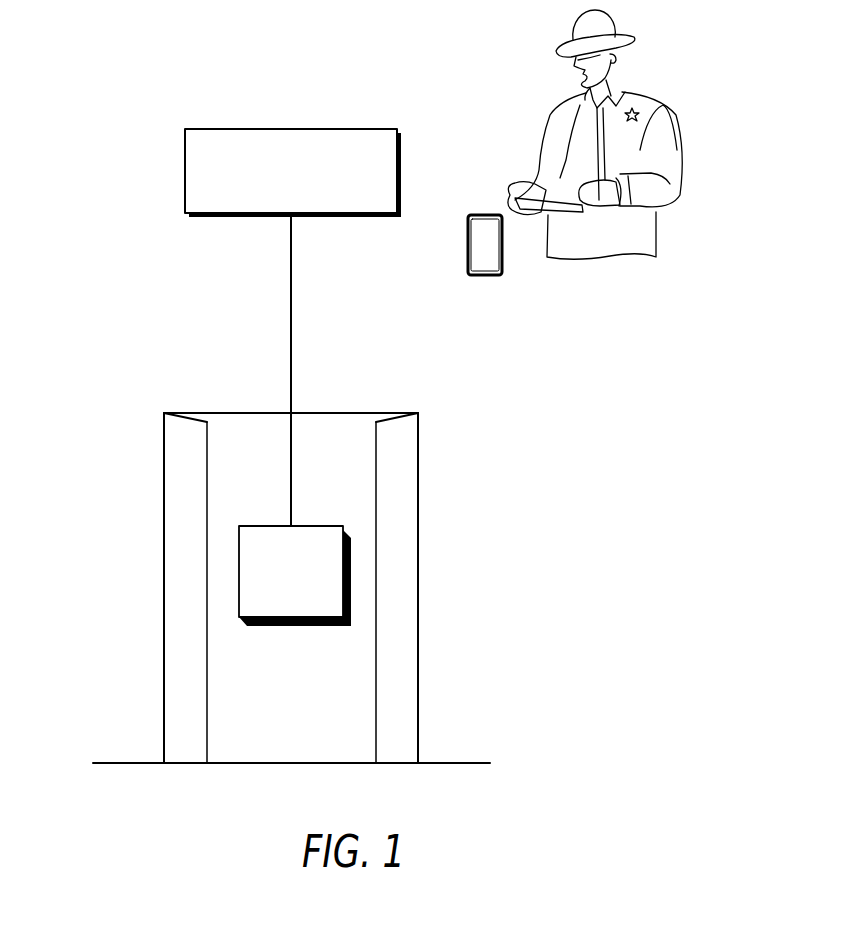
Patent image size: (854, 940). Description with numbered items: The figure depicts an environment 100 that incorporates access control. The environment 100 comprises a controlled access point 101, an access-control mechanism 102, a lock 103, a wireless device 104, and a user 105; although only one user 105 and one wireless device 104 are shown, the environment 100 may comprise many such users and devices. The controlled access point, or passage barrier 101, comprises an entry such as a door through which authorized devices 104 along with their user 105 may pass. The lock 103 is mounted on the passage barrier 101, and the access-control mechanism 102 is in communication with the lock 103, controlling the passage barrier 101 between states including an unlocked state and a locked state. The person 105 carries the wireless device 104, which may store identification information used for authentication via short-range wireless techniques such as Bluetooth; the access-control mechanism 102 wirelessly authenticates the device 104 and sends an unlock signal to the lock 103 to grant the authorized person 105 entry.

The environment 100 is at (93, 30).
The controlled access point 101 is at (418, 578).
The access-control mechanism 102 is at (185, 170).
The lock 103 is at (270, 585).
The wireless device 104 is at (468, 250).
The user 105 is at (683, 135).